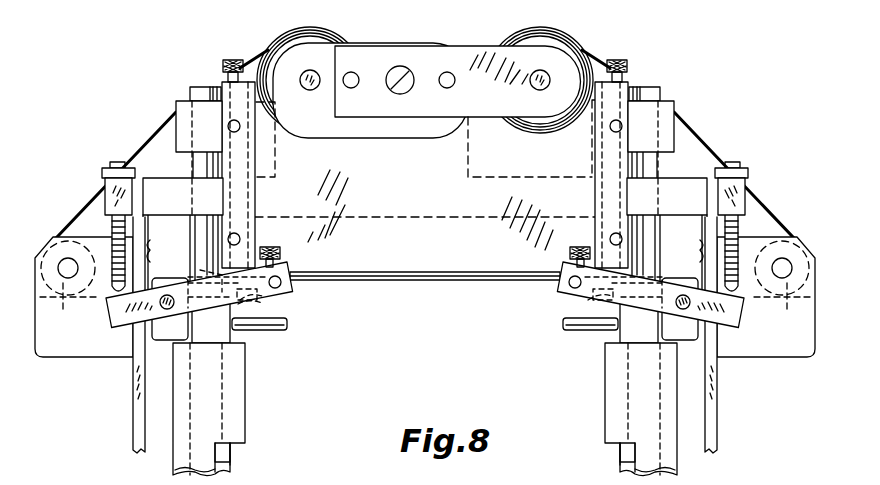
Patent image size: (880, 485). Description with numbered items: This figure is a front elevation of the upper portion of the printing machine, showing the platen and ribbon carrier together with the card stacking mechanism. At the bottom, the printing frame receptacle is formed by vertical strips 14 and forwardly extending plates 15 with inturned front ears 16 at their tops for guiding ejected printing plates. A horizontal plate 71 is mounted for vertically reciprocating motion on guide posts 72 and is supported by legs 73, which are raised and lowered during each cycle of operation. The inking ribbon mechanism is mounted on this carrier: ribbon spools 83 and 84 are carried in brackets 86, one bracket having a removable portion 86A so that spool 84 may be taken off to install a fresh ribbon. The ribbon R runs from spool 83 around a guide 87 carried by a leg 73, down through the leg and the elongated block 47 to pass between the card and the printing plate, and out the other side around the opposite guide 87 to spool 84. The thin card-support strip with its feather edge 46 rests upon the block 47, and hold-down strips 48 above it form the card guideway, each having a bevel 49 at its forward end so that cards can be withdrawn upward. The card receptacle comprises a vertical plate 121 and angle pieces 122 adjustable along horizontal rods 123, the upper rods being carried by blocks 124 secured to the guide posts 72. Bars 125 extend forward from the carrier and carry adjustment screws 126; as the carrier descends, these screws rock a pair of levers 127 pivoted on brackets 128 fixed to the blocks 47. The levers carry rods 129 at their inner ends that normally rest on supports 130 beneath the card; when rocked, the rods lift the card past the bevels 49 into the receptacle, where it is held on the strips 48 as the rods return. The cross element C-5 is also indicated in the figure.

The vertical strips 14 is at (230, 475).
The forwardly extending plates 15 is at (225, 462).
The inturned front ears 16 is at (237, 429).
The feather edge 46 is at (250, 303).
The elongated block 47 is at (218, 332).
The hold-down strips 48 is at (217, 290).
The bevel 49 is at (250, 295).
The horizontal plate 71 is at (165, 186).
The guide posts 72 is at (195, 88).
The legs 73 is at (722, 417).
The ribbon spool 83 is at (344, 44).
The ribbon spool 84 is at (527, 36).
The brackets 86 is at (279, 34).
The removable portion 86A is at (426, 64).
The guide 87 is at (425, 297).
The vertical plate 121 is at (429, 175).
The angle pieces 122 is at (256, 200).
The horizontal rods 123 is at (241, 238).
The blocks 124 is at (181, 106).
The bars 125 is at (112, 190).
The adjustment screws 126 is at (112, 229).
The levers 127 is at (118, 318).
The brackets 128 is at (163, 336).
The rods 129 is at (283, 276).
The supports 130 is at (272, 333).
The ribbon R is at (774, 201).
The cross rod C-5 is at (445, 271).